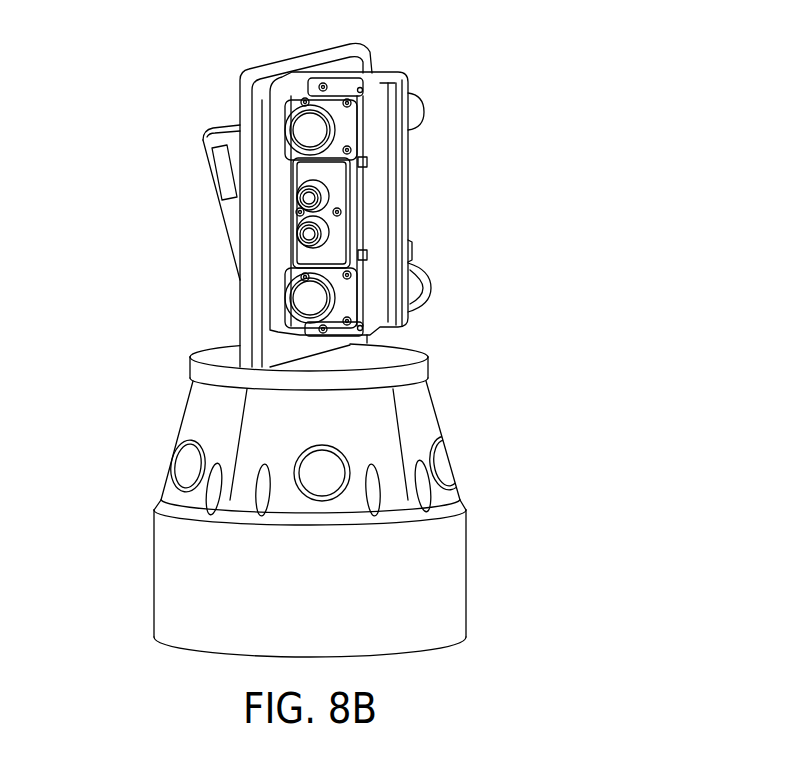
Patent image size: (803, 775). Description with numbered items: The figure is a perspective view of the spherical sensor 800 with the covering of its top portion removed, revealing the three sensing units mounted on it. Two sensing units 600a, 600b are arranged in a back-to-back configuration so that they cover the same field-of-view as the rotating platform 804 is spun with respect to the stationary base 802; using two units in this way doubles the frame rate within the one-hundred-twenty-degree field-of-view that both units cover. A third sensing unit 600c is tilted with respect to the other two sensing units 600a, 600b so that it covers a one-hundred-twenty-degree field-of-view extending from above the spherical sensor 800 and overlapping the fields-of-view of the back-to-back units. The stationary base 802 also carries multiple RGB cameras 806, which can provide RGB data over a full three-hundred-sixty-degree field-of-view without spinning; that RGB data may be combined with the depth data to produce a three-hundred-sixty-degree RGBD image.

The spherical sensor 800 is at (586, 117).
The sensing unit 600a is at (410, 73).
The sensing unit 600b is at (370, 130).
The third sensing unit 600c is at (207, 137).
The stationary base 802 is at (435, 417).
The rotating platform 804 is at (423, 370).
The RGB cameras 806 is at (183, 463).